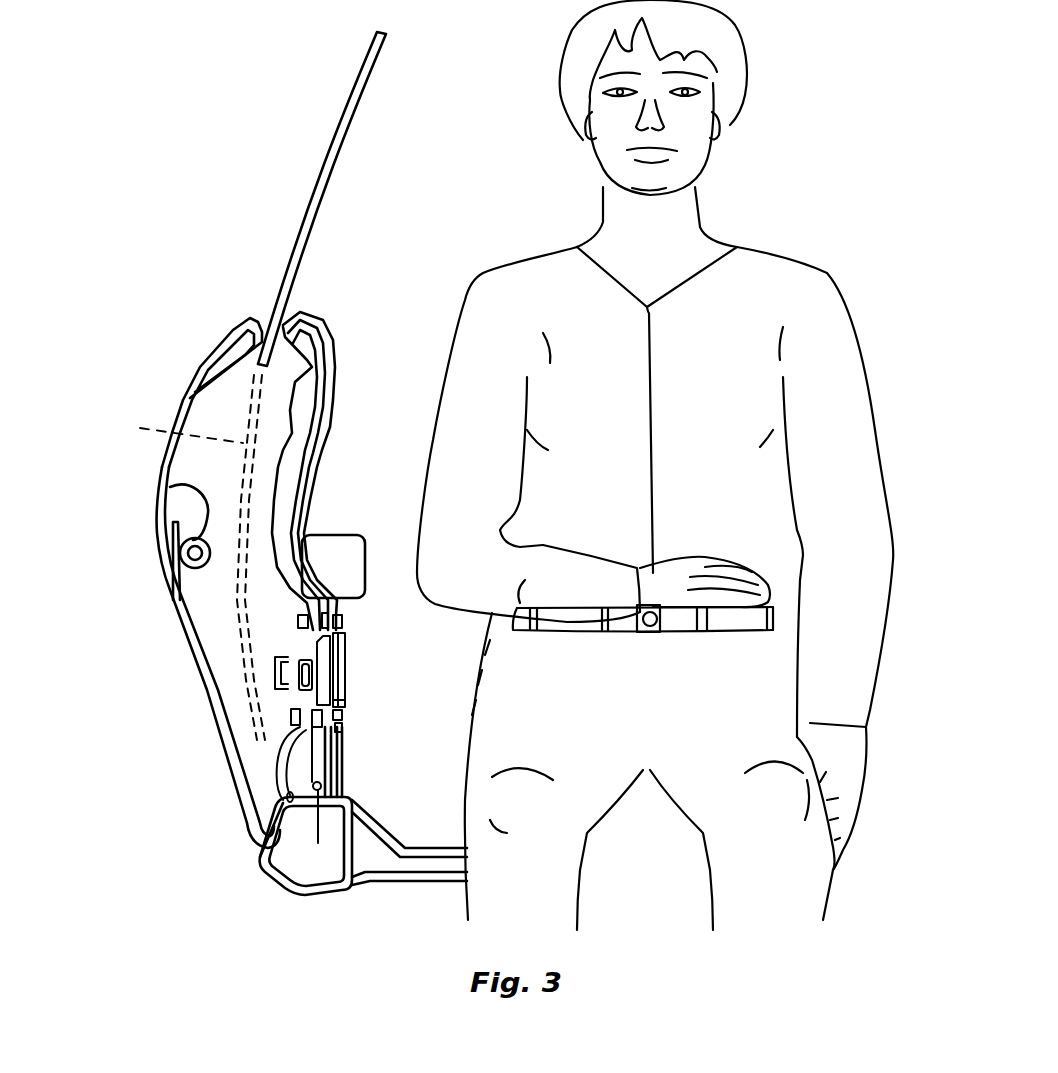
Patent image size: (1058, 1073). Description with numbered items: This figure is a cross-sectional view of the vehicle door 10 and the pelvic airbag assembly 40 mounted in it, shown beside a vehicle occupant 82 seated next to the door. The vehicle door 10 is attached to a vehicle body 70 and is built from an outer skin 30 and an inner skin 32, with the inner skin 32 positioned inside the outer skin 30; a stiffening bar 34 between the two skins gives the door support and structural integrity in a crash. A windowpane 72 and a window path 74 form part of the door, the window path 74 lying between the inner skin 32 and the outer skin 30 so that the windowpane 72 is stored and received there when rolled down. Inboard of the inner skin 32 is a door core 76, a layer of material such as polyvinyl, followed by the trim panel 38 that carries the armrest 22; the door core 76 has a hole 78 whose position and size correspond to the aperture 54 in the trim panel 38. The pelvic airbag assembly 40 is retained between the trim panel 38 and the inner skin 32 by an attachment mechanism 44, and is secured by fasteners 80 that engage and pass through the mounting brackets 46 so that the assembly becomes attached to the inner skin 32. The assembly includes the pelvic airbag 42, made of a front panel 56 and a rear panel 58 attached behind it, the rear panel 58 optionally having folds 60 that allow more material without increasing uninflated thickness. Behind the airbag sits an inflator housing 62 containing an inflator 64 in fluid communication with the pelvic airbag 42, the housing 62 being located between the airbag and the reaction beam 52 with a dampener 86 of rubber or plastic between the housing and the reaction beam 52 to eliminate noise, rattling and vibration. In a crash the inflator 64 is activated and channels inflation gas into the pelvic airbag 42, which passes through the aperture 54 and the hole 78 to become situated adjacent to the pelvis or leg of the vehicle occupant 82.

The vehicle door 10 is at (150, 458).
The armrest 22 is at (345, 556).
The outer skin 30 is at (175, 408).
The inner skin 32 is at (270, 503).
The stiffening bar 34 is at (185, 487).
The trim panel 38 is at (300, 517).
The pelvic airbag assembly 40 is at (307, 727).
The pelvic airbag 42 is at (343, 657).
The attachment mechanism 44 is at (298, 620).
The mounting brackets 46 is at (322, 628).
The reaction beam 52 is at (277, 670).
The aperture 54 is at (347, 622).
The front panel 56 is at (340, 697).
The rear panel 58 is at (335, 673).
The folds 60 is at (323, 650).
The inflator housing 62 is at (277, 680).
The inflator 64 is at (272, 733).
The vehicle body 70 is at (410, 878).
The windowpane 72 is at (308, 228).
The window path 74 is at (173, 428).
The door core 76 is at (300, 452).
The hole 78 is at (345, 625).
The fasteners 80 is at (305, 628).
The vehicle occupant 82 is at (735, 359).
The dampener 86 is at (293, 692).